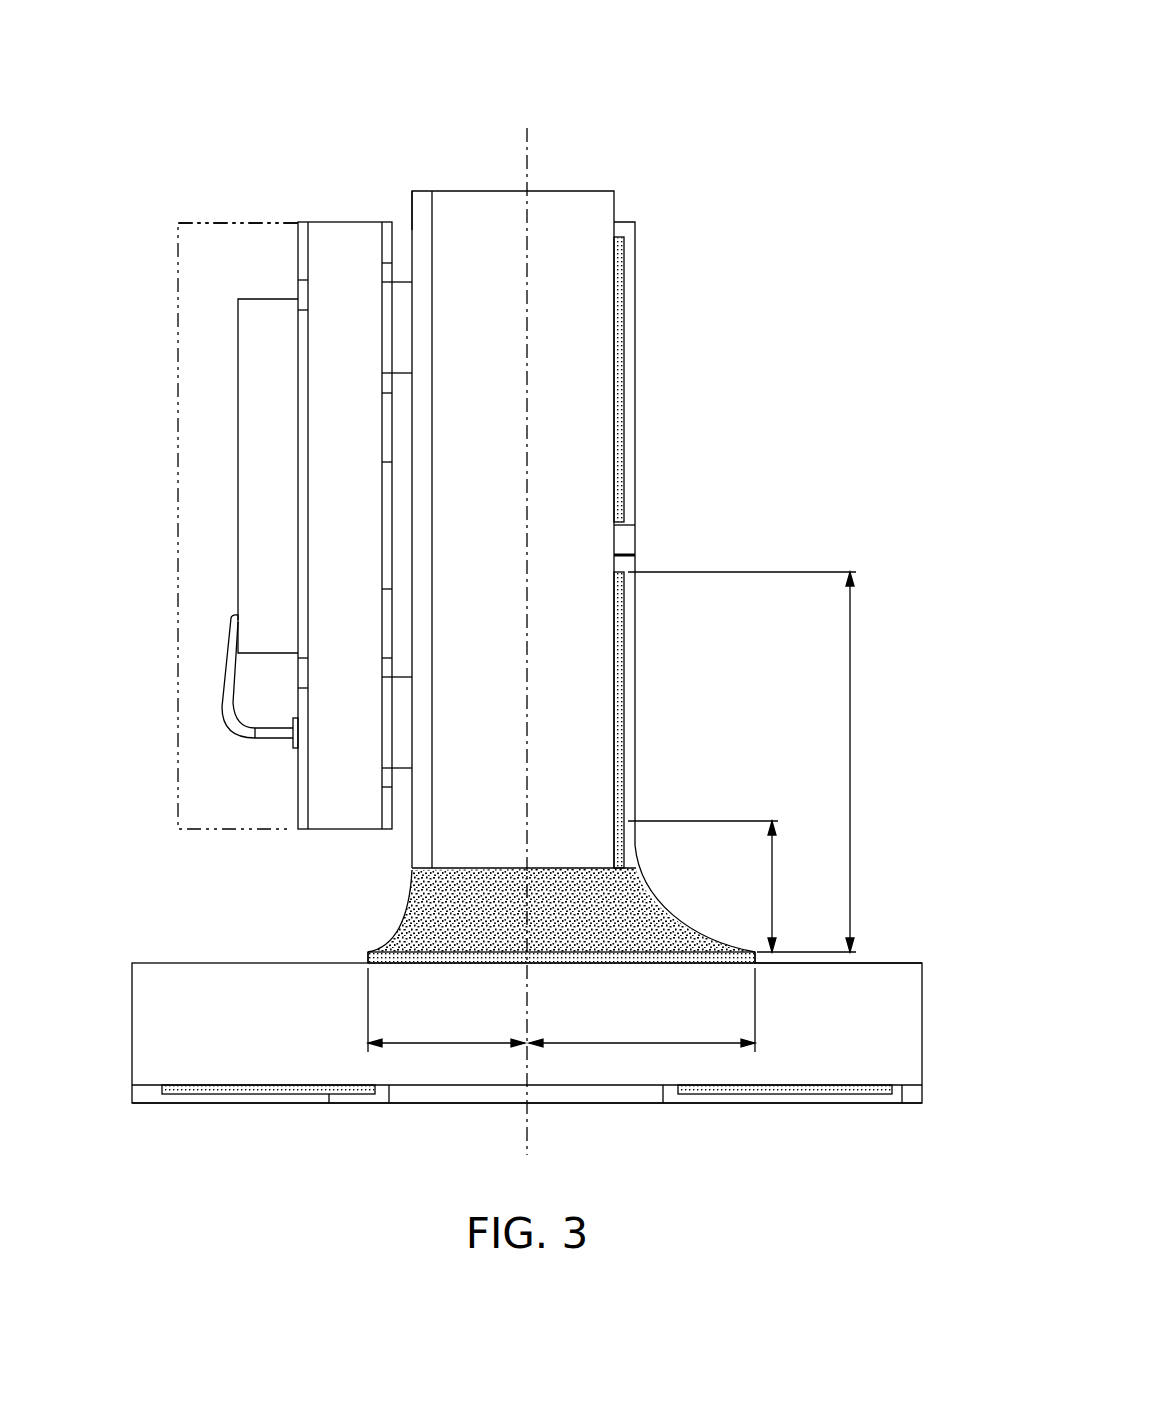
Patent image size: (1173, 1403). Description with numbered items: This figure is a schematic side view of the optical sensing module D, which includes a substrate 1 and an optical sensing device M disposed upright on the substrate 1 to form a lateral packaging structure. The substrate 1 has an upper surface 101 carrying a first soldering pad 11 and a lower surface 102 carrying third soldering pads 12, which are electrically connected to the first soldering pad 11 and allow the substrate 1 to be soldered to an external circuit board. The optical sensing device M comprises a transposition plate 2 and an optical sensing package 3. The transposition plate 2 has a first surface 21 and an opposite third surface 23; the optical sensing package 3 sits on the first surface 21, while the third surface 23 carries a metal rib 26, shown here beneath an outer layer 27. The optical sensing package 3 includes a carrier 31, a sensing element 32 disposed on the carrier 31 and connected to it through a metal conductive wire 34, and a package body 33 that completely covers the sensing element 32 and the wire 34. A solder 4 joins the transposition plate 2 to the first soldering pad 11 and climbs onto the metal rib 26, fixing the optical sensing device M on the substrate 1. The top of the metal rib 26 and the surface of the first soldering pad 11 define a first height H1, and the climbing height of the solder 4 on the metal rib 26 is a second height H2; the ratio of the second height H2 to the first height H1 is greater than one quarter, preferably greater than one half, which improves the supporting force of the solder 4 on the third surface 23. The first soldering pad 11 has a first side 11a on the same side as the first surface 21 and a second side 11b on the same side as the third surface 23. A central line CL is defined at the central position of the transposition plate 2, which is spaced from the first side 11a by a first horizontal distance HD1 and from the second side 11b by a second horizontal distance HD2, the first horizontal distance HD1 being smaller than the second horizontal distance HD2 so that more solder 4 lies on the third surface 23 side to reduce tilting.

The optical sensing module D is at (110, 55).
The optical sensing device M is at (968, 70).
The central line CL is at (525, 625).
The substrate 1 is at (922, 1022).
The upper surface 101 is at (896, 954).
The lower surface 102 is at (902, 1094).
The first soldering pad 11 is at (675, 958).
The first side 11a is at (352, 952).
The second side 11b is at (772, 960).
The third soldering pad 12 is at (272, 1094).
The transposition plate 2 is at (475, 180).
The first surface 21 is at (398, 208).
The third surface 23 is at (630, 433).
The metal rib 26 is at (622, 705).
The cover layer 27 is at (628, 362).
The optical sensing package 3 is at (228, 208).
The carrier 31 is at (348, 808).
The sensing element 32 is at (272, 318).
The package body 33 is at (185, 497).
The metal conductive wire 34 is at (233, 727).
The solder 4 is at (668, 912).
The first height H1 is at (742, 762).
The second height H2 is at (703, 886).
The first horizontal distance HD1 is at (446, 1010).
The second horizontal distance HD2 is at (642, 1010).